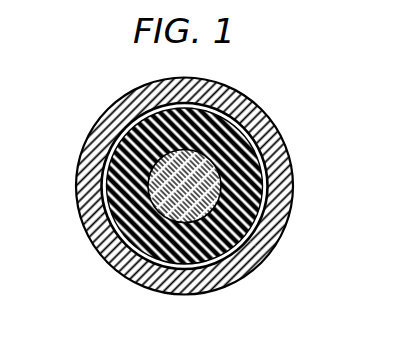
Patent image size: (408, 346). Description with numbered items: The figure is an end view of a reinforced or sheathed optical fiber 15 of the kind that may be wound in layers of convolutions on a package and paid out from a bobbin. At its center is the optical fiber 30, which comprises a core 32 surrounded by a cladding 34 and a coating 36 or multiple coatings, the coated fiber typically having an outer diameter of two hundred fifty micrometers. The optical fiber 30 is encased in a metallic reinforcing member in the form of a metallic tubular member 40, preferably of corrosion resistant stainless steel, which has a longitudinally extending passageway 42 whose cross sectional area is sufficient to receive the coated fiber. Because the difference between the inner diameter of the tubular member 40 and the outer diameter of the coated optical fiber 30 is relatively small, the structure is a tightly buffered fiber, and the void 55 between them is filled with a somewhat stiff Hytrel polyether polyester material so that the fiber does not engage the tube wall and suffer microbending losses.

The sheathed optical fiber 15 is at (70, 285).
The optical fiber 30 is at (260, 204).
The core 32 is at (244, 141).
The cladding 34 is at (141, 263).
The coating 36 is at (120, 220).
The metallic tubular member 40 is at (270, 169).
The longitudinally extending passageway 42 is at (238, 248).
The void 55 is at (94, 155).